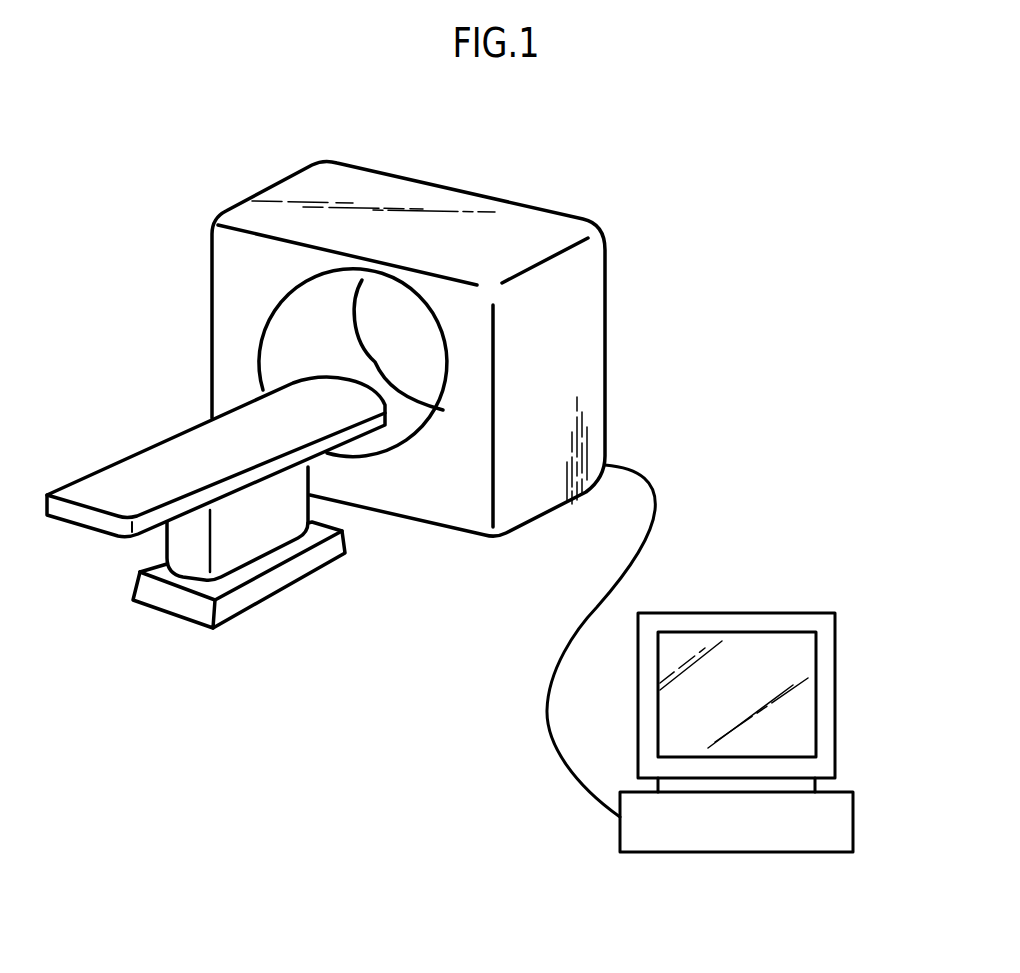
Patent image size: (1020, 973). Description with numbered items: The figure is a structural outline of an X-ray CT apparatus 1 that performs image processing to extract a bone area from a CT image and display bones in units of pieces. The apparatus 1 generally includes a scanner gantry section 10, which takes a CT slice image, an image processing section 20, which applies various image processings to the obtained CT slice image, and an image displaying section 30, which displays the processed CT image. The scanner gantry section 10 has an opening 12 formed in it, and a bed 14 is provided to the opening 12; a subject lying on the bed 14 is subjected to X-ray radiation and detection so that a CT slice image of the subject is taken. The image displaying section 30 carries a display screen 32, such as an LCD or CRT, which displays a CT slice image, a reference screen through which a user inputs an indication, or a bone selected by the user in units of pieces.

The X-ray CT apparatus 1 is at (748, 189).
The scanner gantry section 10 is at (512, 223).
The opening 12 is at (308, 326).
The bed 14 is at (120, 482).
The image processing section 20 is at (735, 838).
The image displaying section 30 is at (760, 612).
The display screen 32 is at (795, 712).